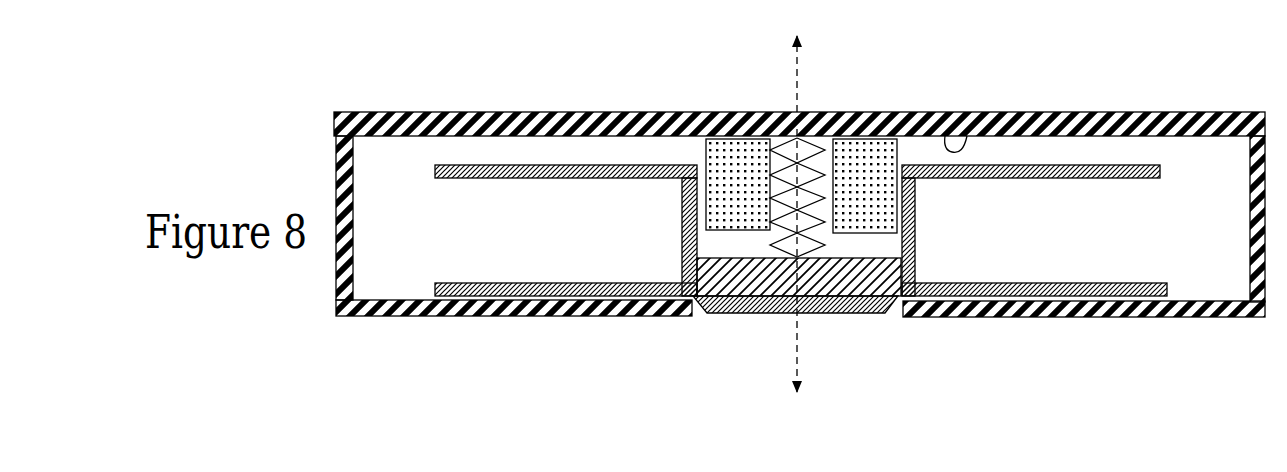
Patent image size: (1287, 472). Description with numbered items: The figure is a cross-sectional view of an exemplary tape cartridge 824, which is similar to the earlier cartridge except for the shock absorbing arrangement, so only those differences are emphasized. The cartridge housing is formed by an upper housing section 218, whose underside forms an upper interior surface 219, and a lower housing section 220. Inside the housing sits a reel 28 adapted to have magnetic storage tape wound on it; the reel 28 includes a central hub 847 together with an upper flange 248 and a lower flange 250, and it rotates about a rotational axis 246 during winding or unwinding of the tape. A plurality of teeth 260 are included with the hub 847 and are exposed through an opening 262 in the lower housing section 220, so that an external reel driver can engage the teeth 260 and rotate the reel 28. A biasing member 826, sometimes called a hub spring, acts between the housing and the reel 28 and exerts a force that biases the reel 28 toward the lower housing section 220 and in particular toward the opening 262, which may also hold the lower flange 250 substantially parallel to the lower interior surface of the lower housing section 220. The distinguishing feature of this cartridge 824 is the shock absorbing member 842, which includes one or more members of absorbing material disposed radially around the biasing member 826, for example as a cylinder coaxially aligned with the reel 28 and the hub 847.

The cartridge 824 is at (776, 223).
The upper flange 248 is at (497, 165).
The reel 28 is at (625, 155).
The biasing member 826 is at (773, 143).
The shock absorbing member 842 is at (848, 139).
The upper interior surface 219 is at (967, 136).
The upper housing section 218 is at (1012, 112).
The lower flange 250 is at (447, 284).
The lower housing section 220 is at (522, 315).
The teeth 260 is at (715, 313).
The opening 262 is at (736, 354).
The rotational axis 246 is at (802, 345).
The hub 847 is at (877, 273).